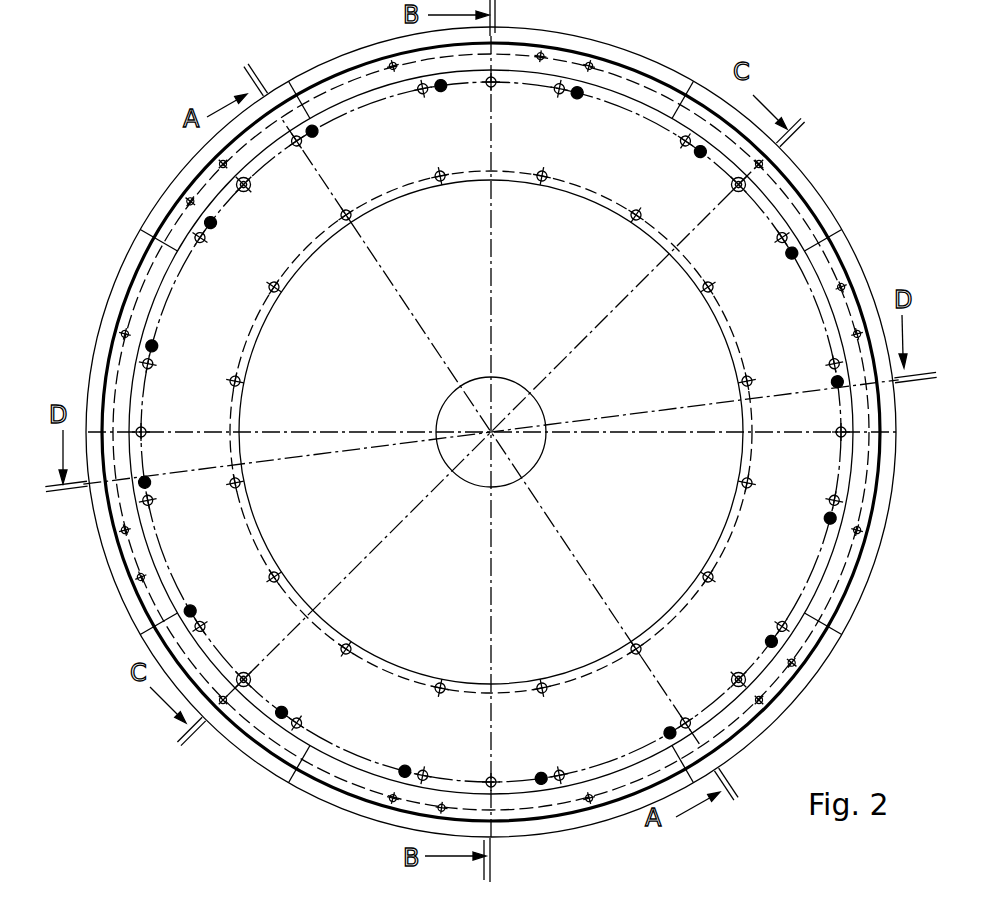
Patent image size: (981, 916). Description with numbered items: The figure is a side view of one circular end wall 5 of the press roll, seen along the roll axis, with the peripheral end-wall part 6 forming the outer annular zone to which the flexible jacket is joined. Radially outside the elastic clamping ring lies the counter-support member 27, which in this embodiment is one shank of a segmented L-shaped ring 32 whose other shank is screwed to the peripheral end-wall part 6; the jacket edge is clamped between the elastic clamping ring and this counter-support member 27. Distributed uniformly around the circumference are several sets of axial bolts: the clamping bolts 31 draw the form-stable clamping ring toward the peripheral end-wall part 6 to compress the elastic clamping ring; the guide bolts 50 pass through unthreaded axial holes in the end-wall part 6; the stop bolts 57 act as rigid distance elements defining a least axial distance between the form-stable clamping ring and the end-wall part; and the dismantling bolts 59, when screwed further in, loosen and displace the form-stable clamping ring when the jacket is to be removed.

The end wall 5 is at (242, 749).
The peripheral end-wall part 6 is at (343, 734).
The counter-support member 27 is at (571, 831).
The clamping bolts 31 is at (295, 150).
The segmented L-shaped ring 32 is at (813, 683).
The guide bolts 50 is at (502, 90).
The stop bolts 57 is at (443, 96).
The dismantling bolts 59 is at (250, 678).